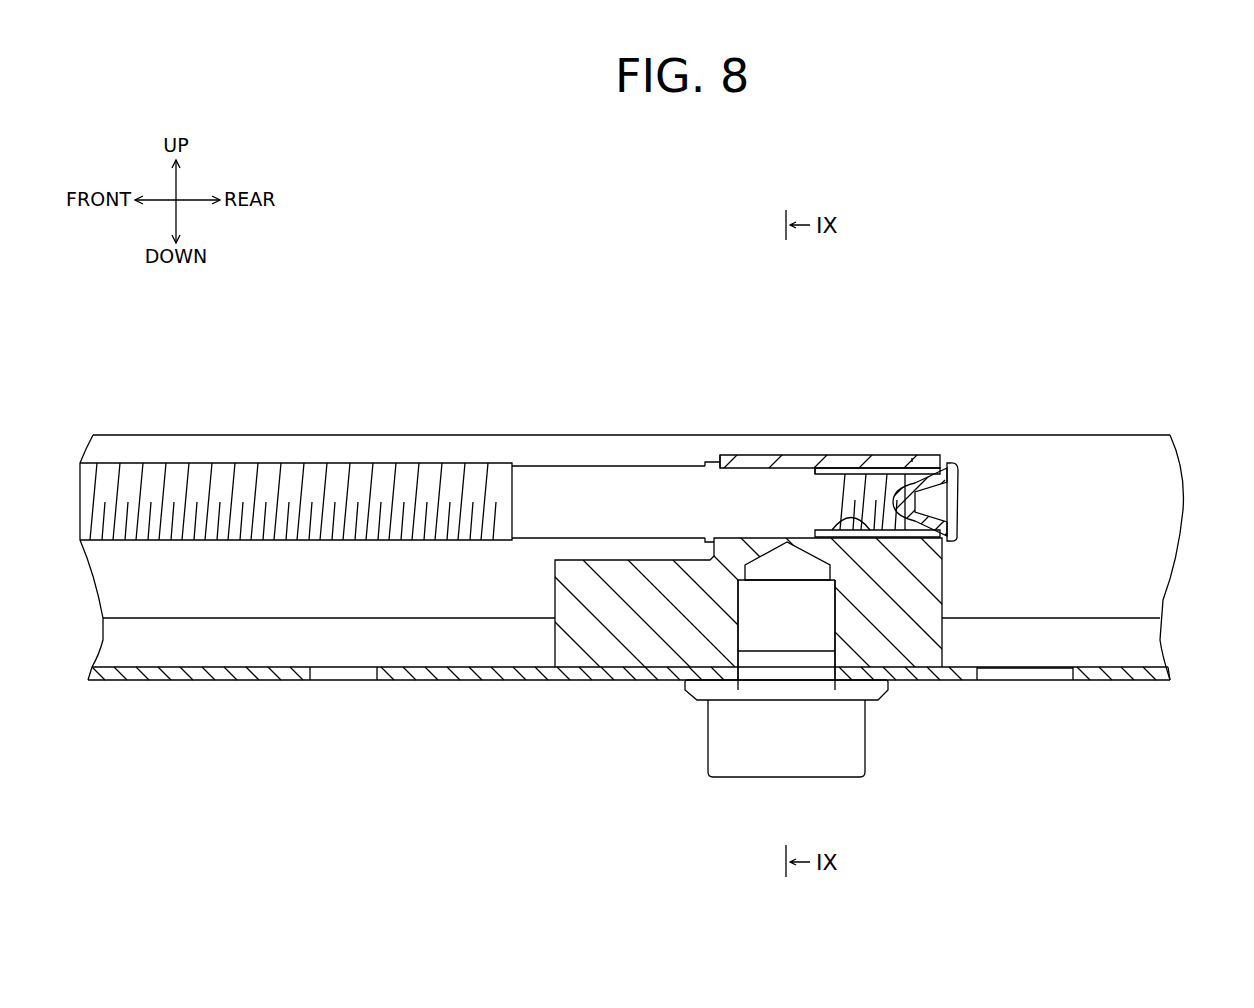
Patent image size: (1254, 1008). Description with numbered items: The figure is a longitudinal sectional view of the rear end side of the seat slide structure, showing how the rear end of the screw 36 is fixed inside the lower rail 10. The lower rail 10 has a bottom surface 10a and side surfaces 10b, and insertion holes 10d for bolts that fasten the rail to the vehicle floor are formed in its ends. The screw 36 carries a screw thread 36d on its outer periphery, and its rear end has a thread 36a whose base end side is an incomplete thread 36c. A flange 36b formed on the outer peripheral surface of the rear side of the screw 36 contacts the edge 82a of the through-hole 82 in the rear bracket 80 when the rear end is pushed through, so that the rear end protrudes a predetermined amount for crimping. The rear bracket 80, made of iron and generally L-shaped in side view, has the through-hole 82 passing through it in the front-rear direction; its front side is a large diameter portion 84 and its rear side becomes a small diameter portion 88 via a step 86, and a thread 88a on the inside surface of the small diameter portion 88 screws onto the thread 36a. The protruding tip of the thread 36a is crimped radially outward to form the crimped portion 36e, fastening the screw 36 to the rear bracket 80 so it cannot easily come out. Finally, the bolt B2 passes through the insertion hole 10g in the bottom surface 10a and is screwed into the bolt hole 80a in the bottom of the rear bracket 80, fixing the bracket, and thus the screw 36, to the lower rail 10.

The lower rail 10 is at (458, 398).
The bottom surface 10a is at (250, 681).
The side surface 10b is at (175, 642).
The insertion hole 10d is at (1027, 676).
The insertion hole 10g is at (752, 681).
The screw 36 is at (295, 475).
The thread 36a is at (912, 458).
The flange 36b is at (703, 458).
The incomplete thread 36c is at (853, 518).
The screw thread 36d is at (949, 503).
The crimped portion 36e is at (959, 467).
The rear bracket 80 is at (633, 641).
The bolt hole 80a is at (810, 628).
The through-hole 82 is at (788, 298).
The edge 82a is at (713, 455).
The large diameter portion 84 is at (773, 455).
The step 86 is at (819, 468).
The small diameter portion 88 is at (877, 520).
The thread 88a is at (958, 446).
The bolt B2 is at (748, 766).